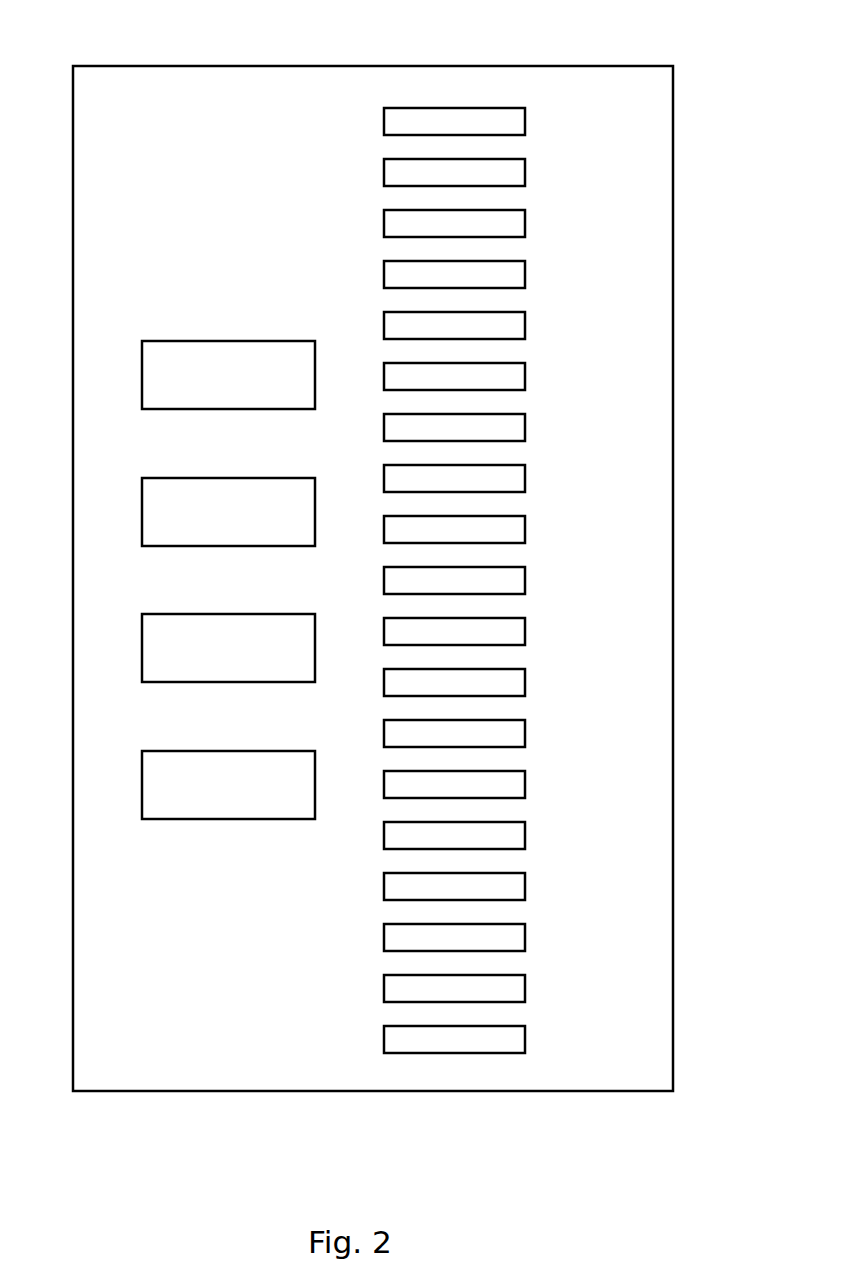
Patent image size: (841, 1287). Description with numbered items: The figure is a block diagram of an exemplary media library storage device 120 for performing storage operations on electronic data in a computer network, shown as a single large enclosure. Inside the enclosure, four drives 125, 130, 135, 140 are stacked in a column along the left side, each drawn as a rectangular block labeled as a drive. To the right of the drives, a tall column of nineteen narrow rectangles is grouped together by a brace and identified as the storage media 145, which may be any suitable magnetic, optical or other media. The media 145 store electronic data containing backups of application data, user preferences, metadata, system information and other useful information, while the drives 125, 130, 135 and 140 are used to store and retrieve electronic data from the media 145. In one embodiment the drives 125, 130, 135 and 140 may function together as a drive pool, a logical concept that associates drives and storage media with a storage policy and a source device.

The media library storage device 120 is at (588, 66).
The drive 125 is at (228, 341).
The drive 130 is at (230, 478).
The drive 135 is at (223, 614).
The drive 140 is at (223, 751).
The storage media 145 is at (542, 102).